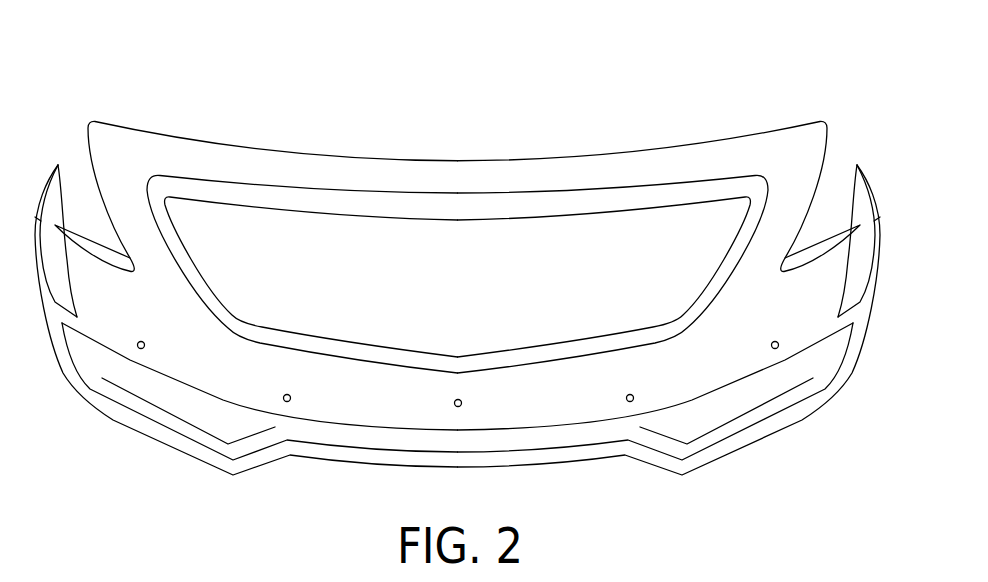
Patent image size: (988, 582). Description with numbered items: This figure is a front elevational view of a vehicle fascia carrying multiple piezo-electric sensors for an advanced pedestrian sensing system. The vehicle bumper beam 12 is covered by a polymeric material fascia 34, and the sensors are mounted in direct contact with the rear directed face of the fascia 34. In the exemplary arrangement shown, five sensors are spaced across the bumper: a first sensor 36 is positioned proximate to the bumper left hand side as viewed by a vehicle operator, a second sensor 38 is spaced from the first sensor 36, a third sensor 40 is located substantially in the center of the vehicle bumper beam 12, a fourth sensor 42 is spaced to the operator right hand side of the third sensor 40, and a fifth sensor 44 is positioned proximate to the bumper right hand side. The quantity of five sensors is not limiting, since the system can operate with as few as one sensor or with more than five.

The vehicle bumper beam 12 is at (862, 106).
The polymeric material fascia 34 is at (790, 310).
The first sensor 36 is at (777, 348).
The second sensor 38 is at (633, 401).
The third sensor 40 is at (461, 406).
The fourth sensor 42 is at (284, 401).
The fifth sensor 44 is at (138, 348).